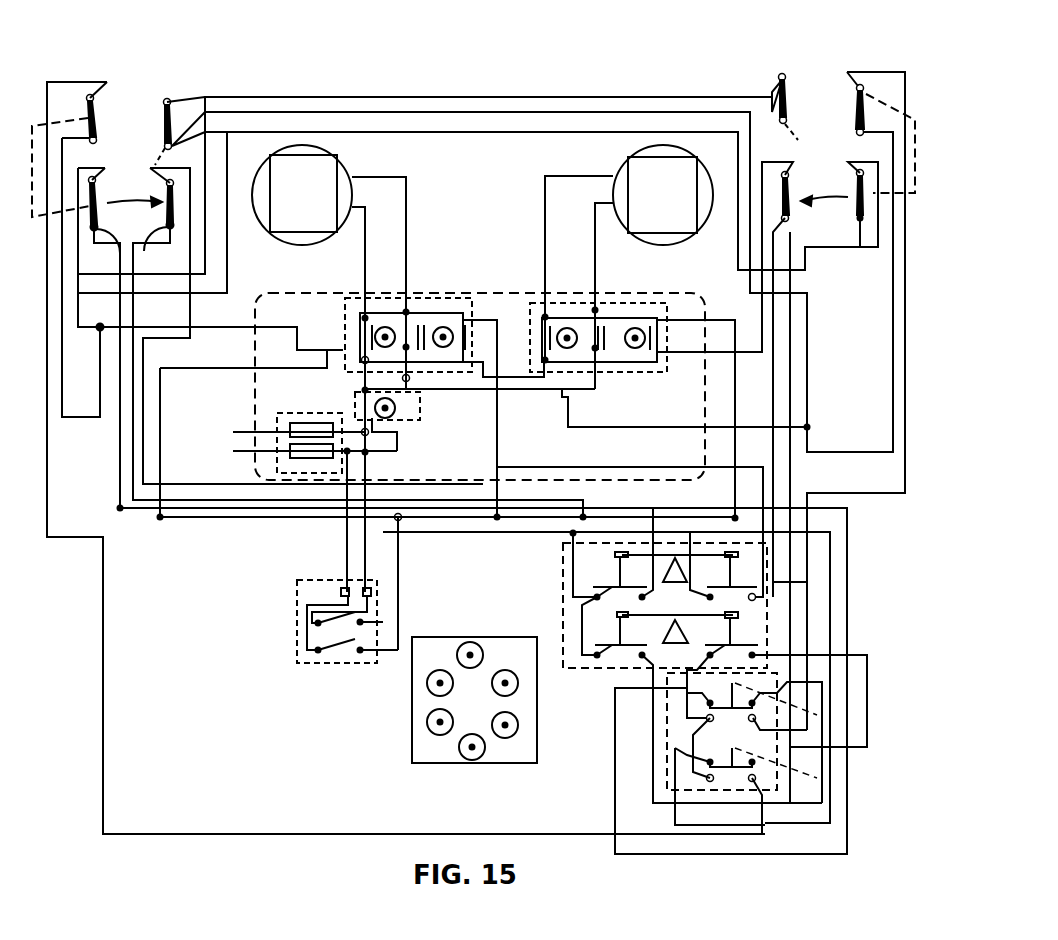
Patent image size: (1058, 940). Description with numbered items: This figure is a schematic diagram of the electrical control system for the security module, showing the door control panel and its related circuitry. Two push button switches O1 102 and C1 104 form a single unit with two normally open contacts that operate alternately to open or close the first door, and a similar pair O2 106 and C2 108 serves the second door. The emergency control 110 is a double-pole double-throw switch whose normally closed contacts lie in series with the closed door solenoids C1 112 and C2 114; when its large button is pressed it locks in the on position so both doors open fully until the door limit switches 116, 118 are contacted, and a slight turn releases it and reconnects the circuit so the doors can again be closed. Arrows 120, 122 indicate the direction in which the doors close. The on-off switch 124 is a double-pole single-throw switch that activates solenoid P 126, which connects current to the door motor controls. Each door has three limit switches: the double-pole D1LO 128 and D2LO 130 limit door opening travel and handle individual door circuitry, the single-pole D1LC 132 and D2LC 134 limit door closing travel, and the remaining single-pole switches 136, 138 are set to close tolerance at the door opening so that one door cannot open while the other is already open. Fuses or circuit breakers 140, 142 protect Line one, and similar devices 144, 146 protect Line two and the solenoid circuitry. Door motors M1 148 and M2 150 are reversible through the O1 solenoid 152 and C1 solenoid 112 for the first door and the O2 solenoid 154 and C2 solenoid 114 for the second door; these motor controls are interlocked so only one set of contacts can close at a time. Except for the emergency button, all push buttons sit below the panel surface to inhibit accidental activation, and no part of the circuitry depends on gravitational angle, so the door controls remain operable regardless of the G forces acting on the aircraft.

The push button switch O1 102 is at (438, 682).
The push button switch C1 104 is at (505, 683).
The push button switch O2 106 is at (440, 722).
The push button switch C2 108 is at (505, 725).
The emergency control 110 is at (470, 652).
The closed door solenoid C1 112 is at (430, 327).
The closed door solenoid C2 114 is at (632, 328).
The door limit switch 116 is at (98, 122).
The door limit switch 118 is at (855, 88).
The arrow 120 is at (114, 200).
The arrow 122 is at (793, 186).
The on-off switch 124 is at (472, 750).
The solenoid P 126 is at (397, 413).
The limit switch D1LO 128 is at (98, 225).
The limit switch D2LO 130 is at (857, 222).
The limit switch D1LC 132 is at (161, 226).
The limit switch D2LC 134 is at (812, 204).
The SPST switch 136 is at (170, 100).
The SPST switch 138 is at (778, 74).
The fuse or circuit breaker 140 is at (320, 418).
The fuse or circuit breaker 142 is at (305, 458).
The fuse or circuit breaker 144 is at (342, 590).
The fuse or circuit breaker 146 is at (371, 588).
The door motor M1 148 is at (285, 203).
The door motor M2 150 is at (646, 203).
The solenoid O1 152 is at (388, 327).
The solenoid O2 154 is at (565, 328).